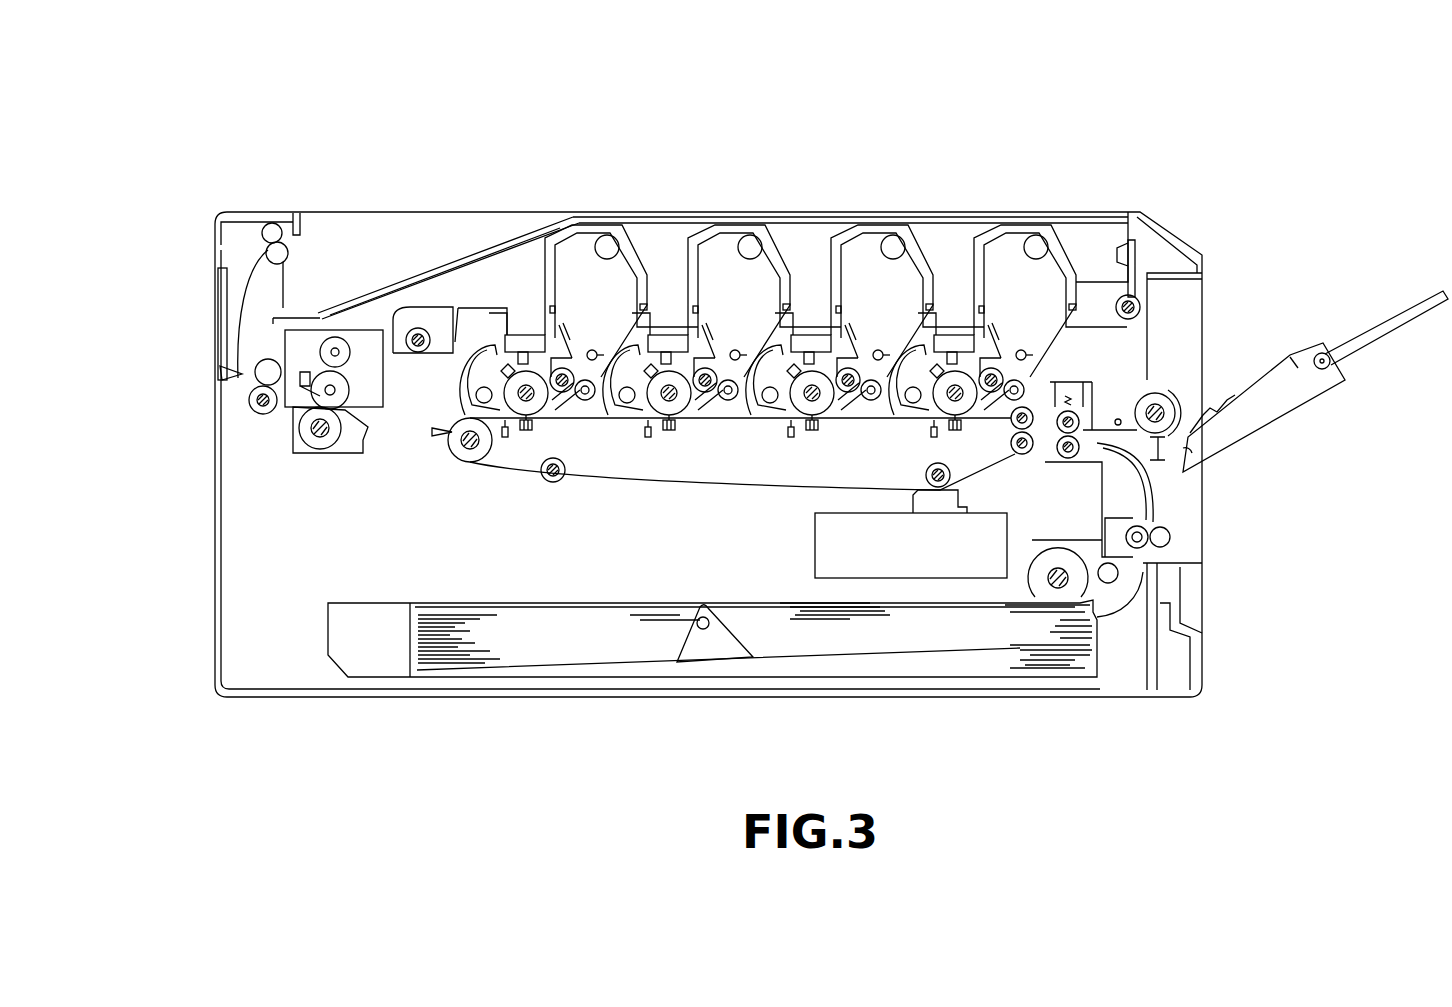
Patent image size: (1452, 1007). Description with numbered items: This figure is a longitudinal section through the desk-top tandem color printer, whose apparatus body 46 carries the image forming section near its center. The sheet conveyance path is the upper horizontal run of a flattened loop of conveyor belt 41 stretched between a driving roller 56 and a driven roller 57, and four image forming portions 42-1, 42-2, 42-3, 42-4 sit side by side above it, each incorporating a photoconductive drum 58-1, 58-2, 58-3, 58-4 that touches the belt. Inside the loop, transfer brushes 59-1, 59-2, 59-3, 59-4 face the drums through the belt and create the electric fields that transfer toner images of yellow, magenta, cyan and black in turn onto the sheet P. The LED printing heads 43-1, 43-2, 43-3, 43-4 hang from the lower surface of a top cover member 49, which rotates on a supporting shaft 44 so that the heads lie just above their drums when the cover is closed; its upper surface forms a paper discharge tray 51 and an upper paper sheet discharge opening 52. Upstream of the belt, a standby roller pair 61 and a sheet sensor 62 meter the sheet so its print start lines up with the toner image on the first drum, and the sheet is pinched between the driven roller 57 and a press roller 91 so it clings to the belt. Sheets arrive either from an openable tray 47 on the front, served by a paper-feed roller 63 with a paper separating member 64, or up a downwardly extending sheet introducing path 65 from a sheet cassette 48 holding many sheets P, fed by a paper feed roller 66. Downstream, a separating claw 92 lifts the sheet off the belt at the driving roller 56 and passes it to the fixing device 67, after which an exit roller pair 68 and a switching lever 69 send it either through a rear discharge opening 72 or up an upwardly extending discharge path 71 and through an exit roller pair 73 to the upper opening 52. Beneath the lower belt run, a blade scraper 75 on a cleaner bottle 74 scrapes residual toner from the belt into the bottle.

The conveyor belt 41 is at (482, 422).
The image forming portion 42-1 is at (1034, 235).
The image forming portion 42-2 is at (890, 235).
The image forming portion 42-3 is at (748, 235).
The image forming portion 42-4 is at (604, 235).
The printing head 43-1 is at (936, 333).
The printing head 43-2 is at (795, 333).
The printing head 43-3 is at (652, 333).
The printing head 43-4 is at (509, 333).
The supporting shaft 44 is at (420, 326).
The apparatus body 46 is at (946, 186).
The openable tray 47 is at (1300, 408).
The sheet cassette 48 is at (1195, 672).
The top cover member 49 is at (1075, 220).
The paper discharge tray 51 is at (386, 278).
The upper paper sheet discharge opening 52 is at (301, 232).
The driving roller 56 is at (458, 445).
The driven roller 57 is at (1027, 456).
The photoconductive drum 58-1 is at (940, 425).
The photoconductive drum 58-2 is at (802, 427).
The photoconductive drum 58-3 is at (648, 442).
The photoconductive drum 58-4 is at (540, 416).
The transfer brush 59-1 is at (943, 437).
The transfer brush 59-2 is at (813, 432).
The transfer brush 59-3 is at (667, 437).
The transfer brush 59-4 is at (530, 437).
The standby roller pair 61 is at (1088, 418).
The sheet sensor 62 is at (1119, 418).
The paper-feed roller 63 is at (1170, 395).
The paper separating member 64 is at (1190, 420).
The downwardly extending sheet introducing path 65 is at (1155, 500).
The paper feed roller 66 is at (1072, 565).
The fixing device 67 is at (322, 455).
The exit roller pair 68 is at (267, 416).
The switching lever 69 is at (232, 389).
The upwardly extending discharge path 71 is at (232, 291).
The discharge opening 72 is at (232, 408).
The exit roller pair 73 is at (270, 223).
The cleaner bottle 74 is at (815, 558).
The blade scraper 75 is at (955, 486).
The press roller 91 is at (1040, 390).
The separating claw 92 is at (447, 431).
The sheet P is at (828, 637).